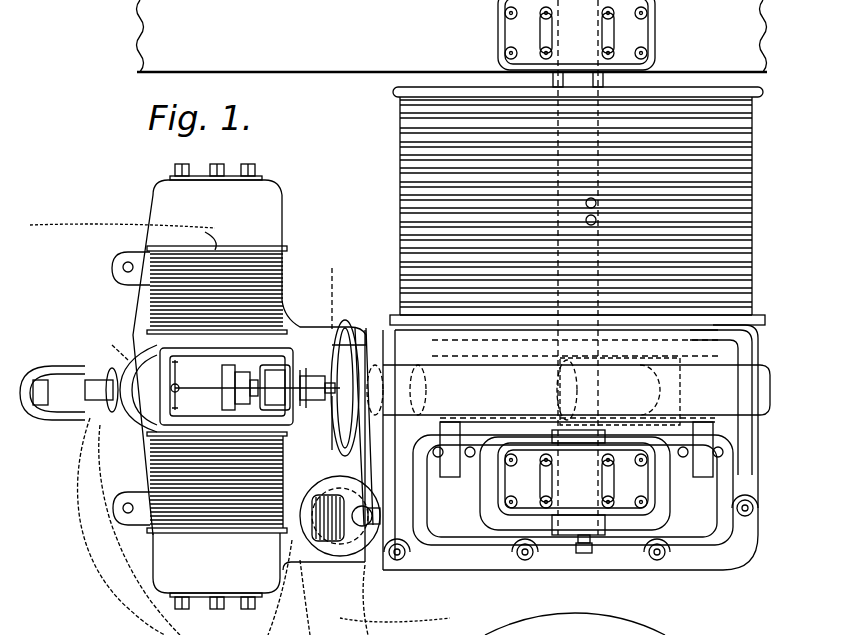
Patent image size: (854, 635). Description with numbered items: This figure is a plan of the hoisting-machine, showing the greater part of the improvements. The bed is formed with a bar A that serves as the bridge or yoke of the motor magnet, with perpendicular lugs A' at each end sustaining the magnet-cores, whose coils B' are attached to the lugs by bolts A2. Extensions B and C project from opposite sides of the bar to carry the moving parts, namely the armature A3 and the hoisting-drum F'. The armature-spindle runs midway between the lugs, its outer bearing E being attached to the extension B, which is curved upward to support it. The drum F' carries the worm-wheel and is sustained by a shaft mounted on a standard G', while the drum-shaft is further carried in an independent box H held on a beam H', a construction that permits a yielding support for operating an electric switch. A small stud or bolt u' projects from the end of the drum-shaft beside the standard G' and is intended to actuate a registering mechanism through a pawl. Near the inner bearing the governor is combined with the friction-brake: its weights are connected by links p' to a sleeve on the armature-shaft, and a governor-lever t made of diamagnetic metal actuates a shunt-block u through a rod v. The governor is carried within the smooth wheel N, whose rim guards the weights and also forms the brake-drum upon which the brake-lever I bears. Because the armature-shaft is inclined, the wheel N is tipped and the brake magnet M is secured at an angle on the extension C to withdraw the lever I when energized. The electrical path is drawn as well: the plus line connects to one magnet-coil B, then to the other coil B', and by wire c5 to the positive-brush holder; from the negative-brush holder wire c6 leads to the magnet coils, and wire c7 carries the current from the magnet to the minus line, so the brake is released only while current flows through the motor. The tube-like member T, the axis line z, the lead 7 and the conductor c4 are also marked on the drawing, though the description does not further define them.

The beam H' is at (452, 36).
The independent box H is at (582, 267).
The hoisting-drum F' is at (577, 206).
The extension C is at (766, 440).
The tube T is at (568, 391).
The standard G' is at (576, 482).
The stud or bolt u' is at (603, 566).
The bar A is at (232, 386).
The armature A3 is at (121, 388).
The perpendicular lugs A' is at (158, 380).
The bolts A2 is at (178, 170).
The extension (magnet-coil) B is at (87, 388).
The magnet-coils B' is at (300, 482).
The outer bearing E is at (52, 393).
The shunt-block u is at (255, 385).
The rod v is at (256, 387).
The governor-lever t is at (325, 380).
The links p' is at (314, 425).
The brake-lever I is at (366, 470).
The smooth wheel (brake-pulley) N is at (349, 319).
The axis line z is at (336, 292).
The magnet M is at (350, 540).
The cable 7 is at (291, 587).
The conductor c4 is at (111, 345).
The wire c5 is at (130, 462).
The wire c6 is at (95, 575).
The wire c7 is at (372, 578).